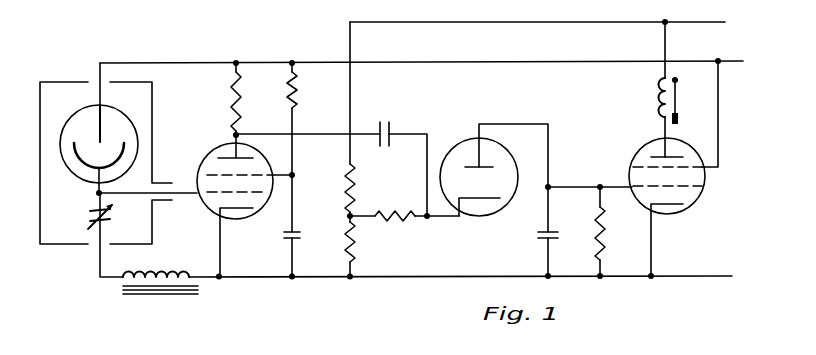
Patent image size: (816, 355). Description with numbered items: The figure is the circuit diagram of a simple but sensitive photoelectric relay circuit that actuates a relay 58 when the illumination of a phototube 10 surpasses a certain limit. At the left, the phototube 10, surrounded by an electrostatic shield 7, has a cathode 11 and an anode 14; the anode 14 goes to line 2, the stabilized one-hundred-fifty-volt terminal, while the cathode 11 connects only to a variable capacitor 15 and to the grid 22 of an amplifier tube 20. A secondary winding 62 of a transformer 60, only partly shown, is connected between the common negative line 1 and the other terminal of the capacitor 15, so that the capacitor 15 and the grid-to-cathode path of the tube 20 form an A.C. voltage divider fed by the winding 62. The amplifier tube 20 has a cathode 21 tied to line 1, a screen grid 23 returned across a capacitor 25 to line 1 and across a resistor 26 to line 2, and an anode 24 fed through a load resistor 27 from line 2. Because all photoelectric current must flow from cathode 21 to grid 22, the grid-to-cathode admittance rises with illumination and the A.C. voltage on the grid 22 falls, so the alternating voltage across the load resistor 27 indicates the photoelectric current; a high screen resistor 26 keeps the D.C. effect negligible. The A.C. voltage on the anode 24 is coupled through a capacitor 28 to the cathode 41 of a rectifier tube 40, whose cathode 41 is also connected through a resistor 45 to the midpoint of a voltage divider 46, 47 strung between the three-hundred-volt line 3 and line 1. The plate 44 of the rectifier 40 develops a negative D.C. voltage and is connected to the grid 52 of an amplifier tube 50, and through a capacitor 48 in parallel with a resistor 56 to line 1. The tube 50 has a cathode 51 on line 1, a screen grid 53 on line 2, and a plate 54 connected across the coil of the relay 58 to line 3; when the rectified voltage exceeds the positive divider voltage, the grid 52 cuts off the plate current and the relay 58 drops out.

The common negative terminal 1 is at (715, 271).
The supply terminal 2 is at (727, 61).
The supply terminal 3 is at (718, 22).
The electrostatic shield 7 is at (60, 252).
The phototube 10 is at (141, 106).
The cathode 11 is at (80, 168).
The anode 14 is at (94, 112).
The variable capacitor 15 is at (87, 218).
The amplifier tube 20 is at (238, 221).
The cathode 21 is at (216, 211).
The grid 22 is at (205, 191).
The screen grid 23 is at (272, 173).
The anode 24 is at (234, 150).
The capacitor 25 is at (287, 238).
The resistor 26 is at (296, 106).
The load resistor 27 is at (231, 95).
The capacitor 28 is at (390, 117).
The rectifier tube 40 is at (491, 217).
The cathode 41 is at (462, 212).
The plate 44 is at (478, 148).
The resistor 45 is at (393, 212).
The voltage divider resistor 46 is at (349, 244).
The voltage divider resistor 47 is at (347, 190).
The capacitor 48 is at (547, 230).
The amplifier tube 50 is at (689, 207).
The cathode 51 is at (654, 208).
The grid 52 is at (629, 186).
The screen grid 53 is at (702, 169).
The plate 54 is at (662, 146).
The resistor 56 is at (602, 252).
The relay 58 is at (656, 100).
The transformer 60 is at (121, 291).
The secondary winding 62 is at (156, 269).